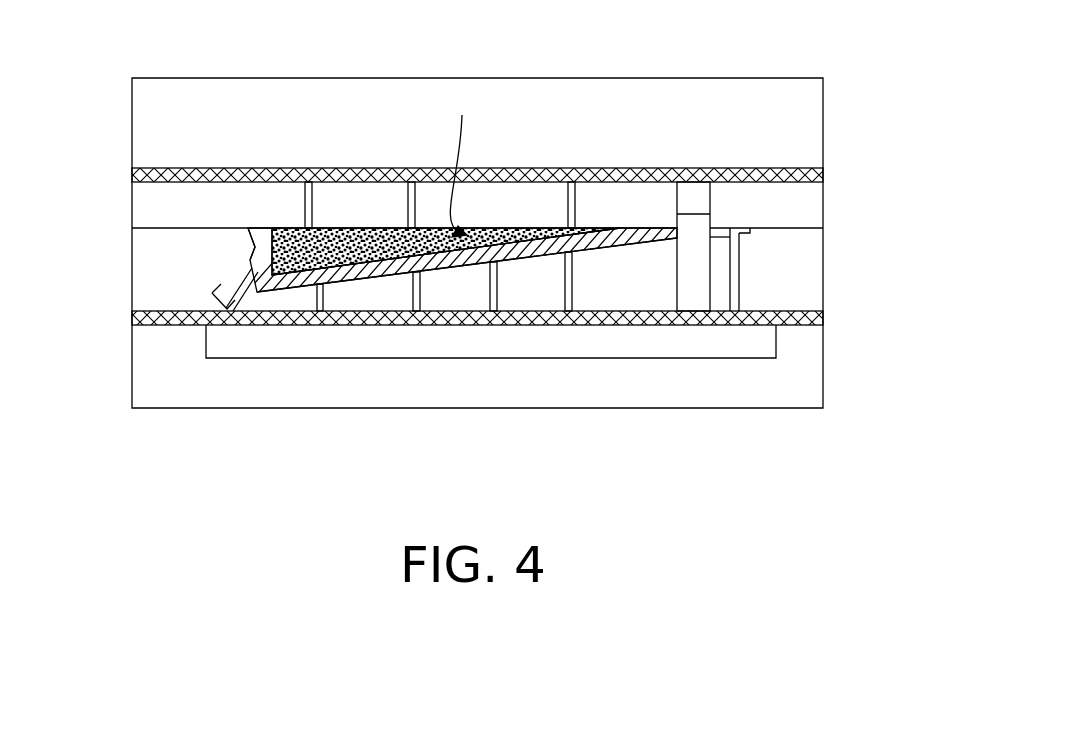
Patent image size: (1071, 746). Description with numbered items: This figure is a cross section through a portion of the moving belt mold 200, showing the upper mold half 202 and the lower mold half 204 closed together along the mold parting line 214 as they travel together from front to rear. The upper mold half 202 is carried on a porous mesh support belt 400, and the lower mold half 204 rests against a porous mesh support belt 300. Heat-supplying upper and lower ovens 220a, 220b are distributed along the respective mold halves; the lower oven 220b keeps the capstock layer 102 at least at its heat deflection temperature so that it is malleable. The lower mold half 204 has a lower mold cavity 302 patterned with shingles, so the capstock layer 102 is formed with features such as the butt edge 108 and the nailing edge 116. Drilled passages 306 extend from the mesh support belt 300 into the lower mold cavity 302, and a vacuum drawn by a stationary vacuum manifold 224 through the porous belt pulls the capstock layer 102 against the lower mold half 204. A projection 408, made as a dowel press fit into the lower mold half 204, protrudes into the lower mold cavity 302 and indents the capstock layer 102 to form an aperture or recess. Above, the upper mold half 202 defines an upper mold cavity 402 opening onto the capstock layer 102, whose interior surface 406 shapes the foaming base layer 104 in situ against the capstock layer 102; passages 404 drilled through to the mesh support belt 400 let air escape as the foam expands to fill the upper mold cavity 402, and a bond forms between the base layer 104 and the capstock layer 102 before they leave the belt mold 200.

The upper oven 220a is at (780, 78).
The lower oven 220b is at (798, 382).
The porous mesh support belt 400 is at (805, 170).
The porous mesh support belt 300 is at (792, 325).
The upper mold half 202 is at (792, 205).
The mold parting line 214 is at (805, 228).
The lower mold half 204 is at (800, 276).
The belt mold 200 is at (549, 164).
The passages 404 is at (307, 200).
The projection 408 is at (697, 302).
The base layer 104 is at (290, 250).
The capstock layer 102 is at (635, 248).
The lower mold cavity 302 is at (622, 250).
The upper mold cavity 402 is at (487, 240).
The interior surface 406 is at (467, 163).
The butt edge 108 is at (247, 250).
The nailing edge 116 is at (743, 238).
The vacuum manifold 224 is at (262, 345).
The passages 306 is at (220, 298).